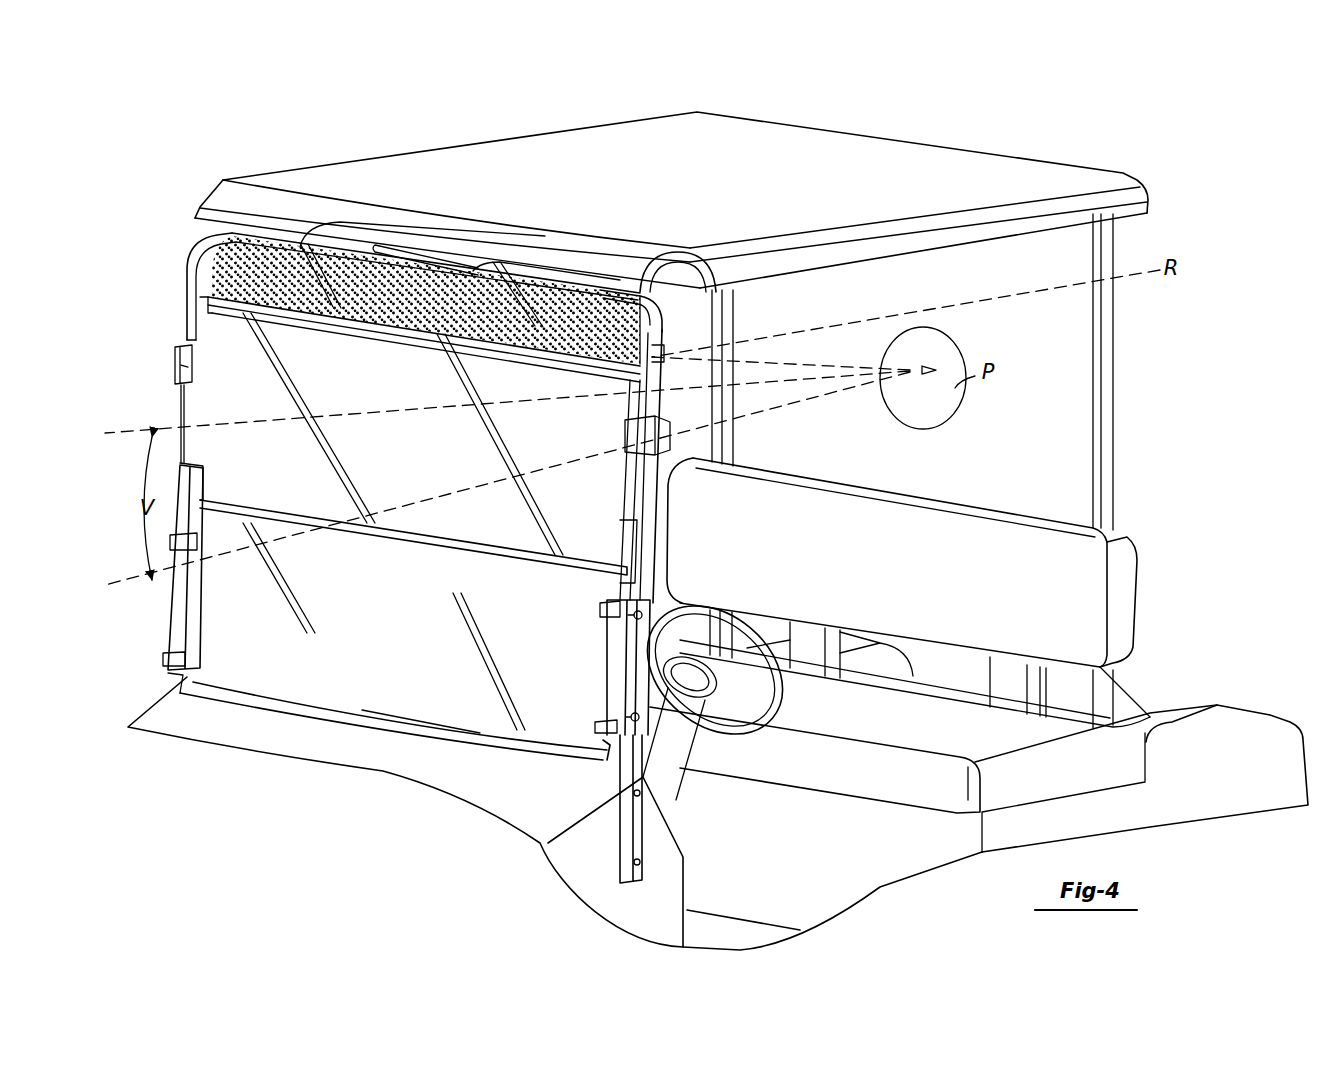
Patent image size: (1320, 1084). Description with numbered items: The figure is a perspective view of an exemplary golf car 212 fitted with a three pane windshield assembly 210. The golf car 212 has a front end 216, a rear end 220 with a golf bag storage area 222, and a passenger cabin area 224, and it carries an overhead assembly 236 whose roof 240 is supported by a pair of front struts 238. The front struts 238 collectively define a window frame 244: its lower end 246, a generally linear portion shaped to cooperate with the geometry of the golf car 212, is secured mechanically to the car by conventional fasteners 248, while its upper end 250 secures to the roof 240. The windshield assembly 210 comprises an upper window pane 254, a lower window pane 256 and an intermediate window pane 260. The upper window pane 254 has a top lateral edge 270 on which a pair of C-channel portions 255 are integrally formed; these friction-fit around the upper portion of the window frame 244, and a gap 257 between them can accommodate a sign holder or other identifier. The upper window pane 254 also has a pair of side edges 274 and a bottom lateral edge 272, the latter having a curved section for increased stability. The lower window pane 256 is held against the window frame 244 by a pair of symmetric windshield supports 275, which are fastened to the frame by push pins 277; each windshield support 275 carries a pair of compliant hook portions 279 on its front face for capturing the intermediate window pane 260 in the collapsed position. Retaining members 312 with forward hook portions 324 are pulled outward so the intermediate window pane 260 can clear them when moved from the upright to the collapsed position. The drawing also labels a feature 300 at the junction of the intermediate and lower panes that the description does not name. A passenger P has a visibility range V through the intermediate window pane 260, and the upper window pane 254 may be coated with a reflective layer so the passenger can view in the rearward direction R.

The three pane windshield assembly 210 is at (240, 128).
The overhead assembly 236 is at (158, 200).
The roof 240 is at (323, 178).
The side edges 274 is at (235, 248).
The C-channel portions 255 is at (347, 243).
The gap 257 is at (432, 252).
The top lateral edge 270 is at (590, 283).
The upper end 250 is at (633, 328).
The front struts 238 is at (190, 312).
The window frame 244 is at (660, 357).
The retaining members 312 is at (177, 366).
The forward hook portions 324 is at (183, 368).
The upper window pane 254 is at (400, 308).
The bottom lateral edge 272 is at (405, 331).
The passenger cabin area 224 is at (1000, 462).
The intermediate window pane 260 is at (395, 463).
The hinge 300 is at (435, 540).
The push pins 277 is at (645, 612).
The compliant hook portions 279 is at (183, 545).
The golf bag storage area 222 is at (1172, 630).
The lower window pane 256 is at (394, 643).
The windshield supports 275 is at (183, 620).
The golf car 212 is at (1185, 737).
The rear end 220 is at (1272, 745).
The lower end 246 is at (627, 823).
The fasteners 248 is at (641, 861).
The front end 216 is at (383, 771).